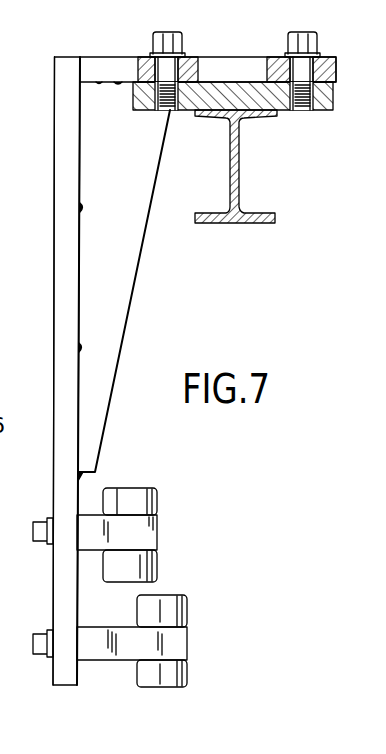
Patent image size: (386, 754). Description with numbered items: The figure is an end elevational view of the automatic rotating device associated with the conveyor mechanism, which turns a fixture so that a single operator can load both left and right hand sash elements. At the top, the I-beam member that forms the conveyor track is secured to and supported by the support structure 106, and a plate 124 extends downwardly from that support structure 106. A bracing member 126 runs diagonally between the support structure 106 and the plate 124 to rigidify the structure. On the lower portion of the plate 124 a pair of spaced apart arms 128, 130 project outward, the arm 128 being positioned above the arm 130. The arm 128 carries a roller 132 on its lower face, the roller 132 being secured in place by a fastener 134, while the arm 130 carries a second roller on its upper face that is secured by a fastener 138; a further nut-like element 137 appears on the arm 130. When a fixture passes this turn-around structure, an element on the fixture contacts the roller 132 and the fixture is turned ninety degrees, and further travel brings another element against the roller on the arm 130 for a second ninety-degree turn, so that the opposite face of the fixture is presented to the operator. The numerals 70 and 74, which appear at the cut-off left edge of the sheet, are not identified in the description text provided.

The carriage frame 70 is at (168, 350).
The support member 74 is at (27, 371).
The support structure 106 is at (112, 65).
The plate 124 is at (57, 164).
The bracing member 126 is at (128, 277).
The arm 128 is at (157, 528).
The arm 130 is at (110, 662).
The roller 132 is at (157, 562).
The fastener 134 is at (155, 498).
The upper nut of lower bolt 137 is at (185, 613).
The fastener 138 is at (167, 683).